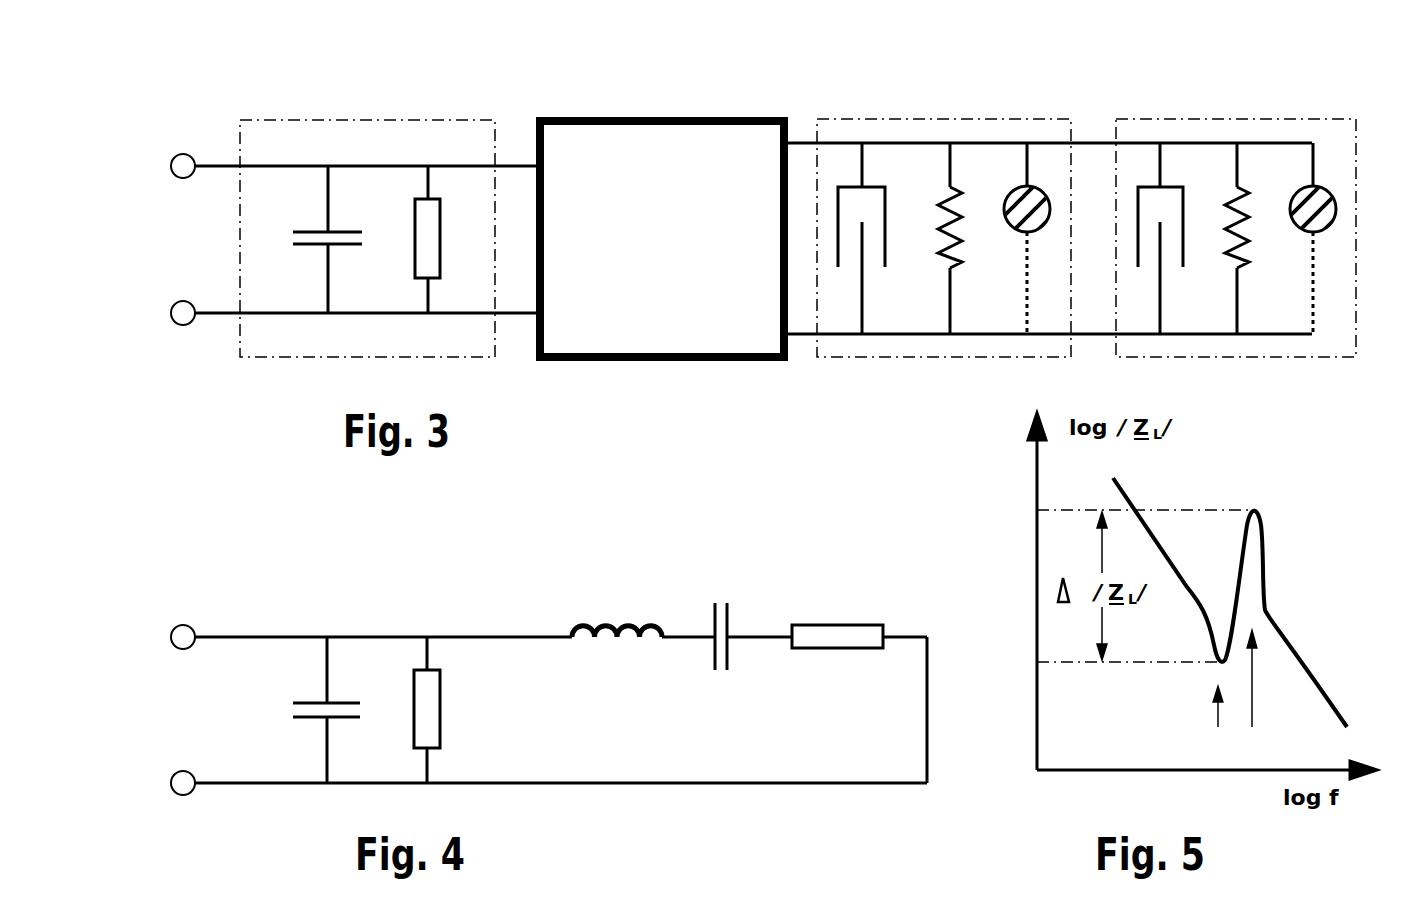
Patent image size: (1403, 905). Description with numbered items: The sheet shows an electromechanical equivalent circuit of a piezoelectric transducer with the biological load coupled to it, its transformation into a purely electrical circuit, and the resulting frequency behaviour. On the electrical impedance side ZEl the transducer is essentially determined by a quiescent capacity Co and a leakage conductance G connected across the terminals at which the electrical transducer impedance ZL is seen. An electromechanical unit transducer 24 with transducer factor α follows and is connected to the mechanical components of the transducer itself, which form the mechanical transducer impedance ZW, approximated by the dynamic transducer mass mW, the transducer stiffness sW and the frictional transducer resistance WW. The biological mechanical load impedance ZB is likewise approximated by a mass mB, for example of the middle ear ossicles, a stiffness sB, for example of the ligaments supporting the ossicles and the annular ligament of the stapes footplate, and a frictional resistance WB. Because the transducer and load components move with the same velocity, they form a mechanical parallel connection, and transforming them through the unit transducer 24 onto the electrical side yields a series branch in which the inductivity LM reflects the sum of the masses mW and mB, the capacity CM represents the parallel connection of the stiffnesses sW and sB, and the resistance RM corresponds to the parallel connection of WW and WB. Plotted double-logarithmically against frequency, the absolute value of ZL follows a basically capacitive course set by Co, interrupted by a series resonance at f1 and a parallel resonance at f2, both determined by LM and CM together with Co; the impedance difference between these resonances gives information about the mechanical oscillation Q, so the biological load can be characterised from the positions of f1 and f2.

In FIG. 3, the electromechanical unit transducer 24 is at (658, 140).
In FIG. 3, the electrical transducer impedance ZL is at (151, 254).
In FIG. 4, the electrical transducer impedance ZL is at (151, 725).
In FIG. 3, the electrical impedance side ZEl is at (373, 68).
In FIG. 3, the quiescent capacity Co is at (307, 239).
In FIG. 4, the quiescent capacity Co is at (305, 710).
In FIG. 3, the leakage conductance G is at (449, 239).
In FIG. 4, the leakage conductance G is at (448, 710).
In FIG. 3, the mechanical transducer impedance ZW is at (924, 68).
In FIG. 3, the frictional transducer resistance WW is at (877, 238).
In FIG. 3, the transducer stiffness sW is at (934, 238).
In FIG. 3, the dynamic transducer mass mW is at (1024, 238).
In FIG. 3, the biological mechanical load impedance ZB is at (1214, 68).
In FIG. 3, the frictional resistance of the biological load WB is at (1174, 238).
In FIG. 3, the stiffness of the biological load sB is at (1221, 238).
In FIG. 3, the mass of the biological load mB is at (1312, 238).
In FIG. 4, the inductivity LM is at (643, 582).
In FIG. 4, the capacity CM is at (749, 599).
In FIG. 4, the resistance RM is at (859, 588).
In FIG. 5, the series resonance frequency f1 is at (1219, 723).
In FIG. 5, the parallel resonance frequency f2 is at (1252, 695).